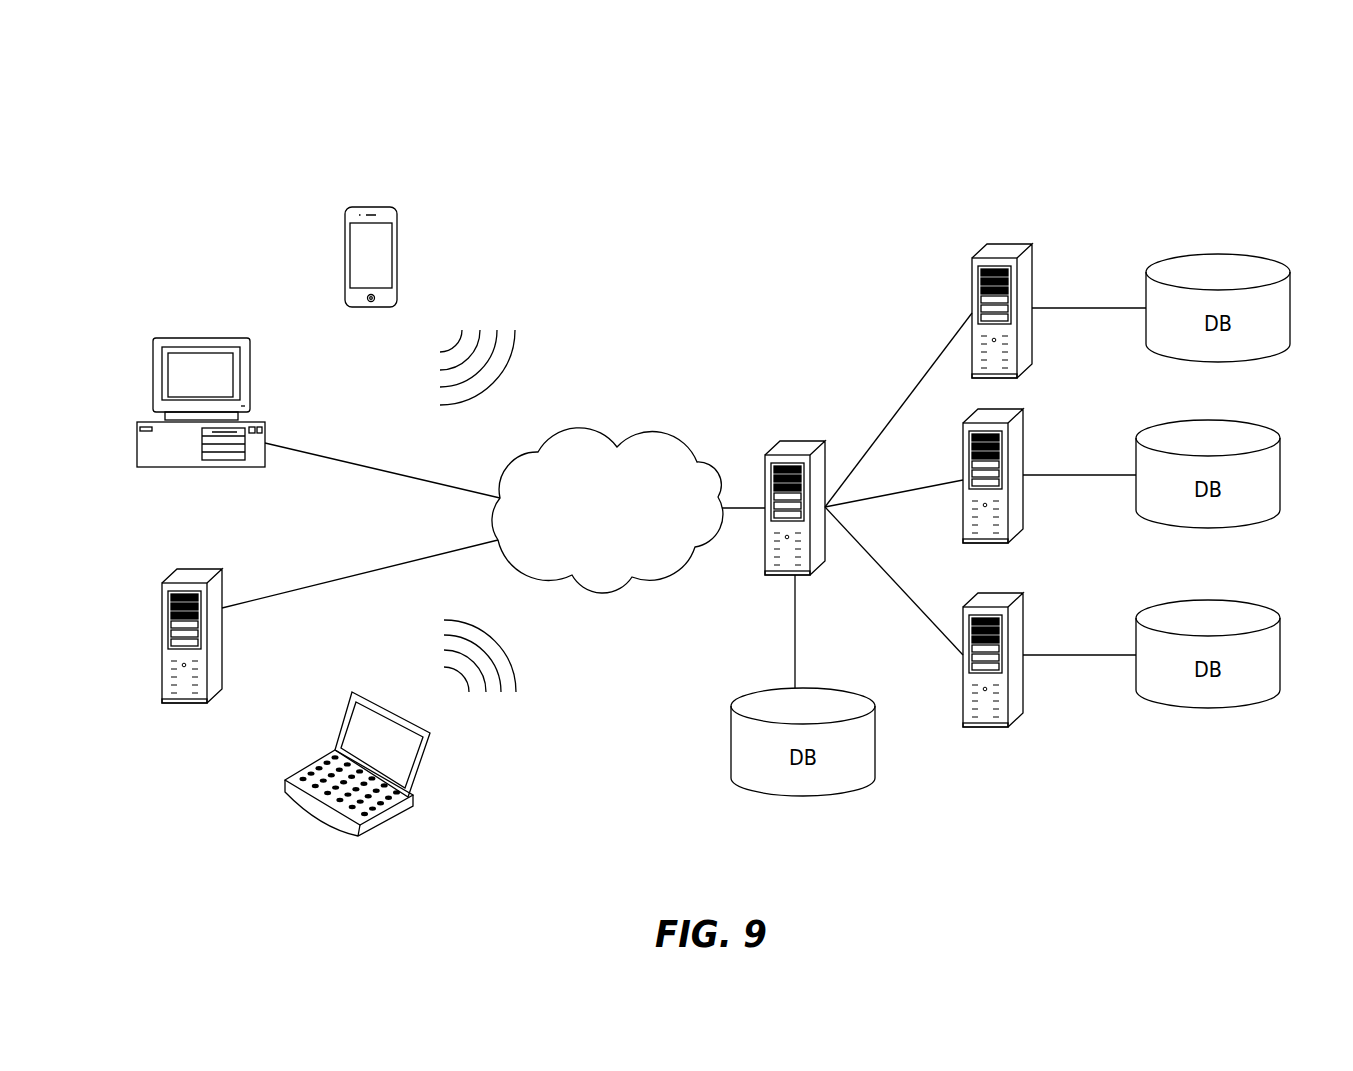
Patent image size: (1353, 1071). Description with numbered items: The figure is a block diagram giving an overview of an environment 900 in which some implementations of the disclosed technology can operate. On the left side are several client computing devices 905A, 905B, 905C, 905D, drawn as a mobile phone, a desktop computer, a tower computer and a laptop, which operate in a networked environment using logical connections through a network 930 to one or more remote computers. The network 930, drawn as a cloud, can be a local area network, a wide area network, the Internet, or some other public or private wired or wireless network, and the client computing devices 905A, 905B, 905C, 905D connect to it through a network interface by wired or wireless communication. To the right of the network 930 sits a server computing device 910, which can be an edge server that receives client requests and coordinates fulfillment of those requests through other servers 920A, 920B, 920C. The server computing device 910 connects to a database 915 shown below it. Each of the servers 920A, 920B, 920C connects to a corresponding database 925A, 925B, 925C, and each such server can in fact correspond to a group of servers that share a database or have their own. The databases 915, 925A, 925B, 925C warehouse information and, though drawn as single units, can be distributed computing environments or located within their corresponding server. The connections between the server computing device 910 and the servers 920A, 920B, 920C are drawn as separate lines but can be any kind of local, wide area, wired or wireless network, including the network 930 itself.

The environment 900 is at (1088, 124).
The client computing device 905A is at (393, 207).
The client computing device 905B is at (246, 338).
The client computing device 905C is at (220, 572).
The client computing device 905D is at (428, 765).
The network 930 is at (663, 431).
The server computing device 910 is at (807, 440).
The database 915 is at (855, 693).
The server 920A is at (1028, 243).
The database 925A is at (1213, 253).
The server 920B is at (1020, 408).
The database 925B is at (1205, 420).
The server 920C is at (1022, 588).
The database 925C is at (1207, 600).